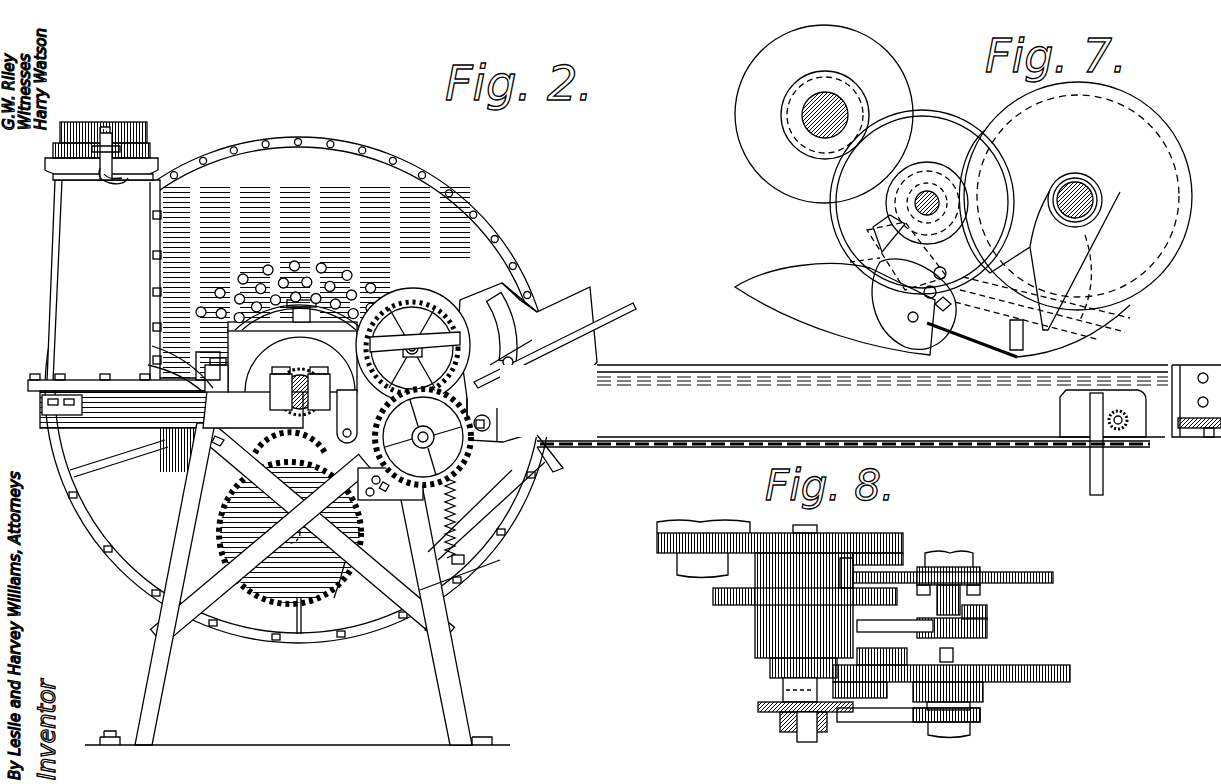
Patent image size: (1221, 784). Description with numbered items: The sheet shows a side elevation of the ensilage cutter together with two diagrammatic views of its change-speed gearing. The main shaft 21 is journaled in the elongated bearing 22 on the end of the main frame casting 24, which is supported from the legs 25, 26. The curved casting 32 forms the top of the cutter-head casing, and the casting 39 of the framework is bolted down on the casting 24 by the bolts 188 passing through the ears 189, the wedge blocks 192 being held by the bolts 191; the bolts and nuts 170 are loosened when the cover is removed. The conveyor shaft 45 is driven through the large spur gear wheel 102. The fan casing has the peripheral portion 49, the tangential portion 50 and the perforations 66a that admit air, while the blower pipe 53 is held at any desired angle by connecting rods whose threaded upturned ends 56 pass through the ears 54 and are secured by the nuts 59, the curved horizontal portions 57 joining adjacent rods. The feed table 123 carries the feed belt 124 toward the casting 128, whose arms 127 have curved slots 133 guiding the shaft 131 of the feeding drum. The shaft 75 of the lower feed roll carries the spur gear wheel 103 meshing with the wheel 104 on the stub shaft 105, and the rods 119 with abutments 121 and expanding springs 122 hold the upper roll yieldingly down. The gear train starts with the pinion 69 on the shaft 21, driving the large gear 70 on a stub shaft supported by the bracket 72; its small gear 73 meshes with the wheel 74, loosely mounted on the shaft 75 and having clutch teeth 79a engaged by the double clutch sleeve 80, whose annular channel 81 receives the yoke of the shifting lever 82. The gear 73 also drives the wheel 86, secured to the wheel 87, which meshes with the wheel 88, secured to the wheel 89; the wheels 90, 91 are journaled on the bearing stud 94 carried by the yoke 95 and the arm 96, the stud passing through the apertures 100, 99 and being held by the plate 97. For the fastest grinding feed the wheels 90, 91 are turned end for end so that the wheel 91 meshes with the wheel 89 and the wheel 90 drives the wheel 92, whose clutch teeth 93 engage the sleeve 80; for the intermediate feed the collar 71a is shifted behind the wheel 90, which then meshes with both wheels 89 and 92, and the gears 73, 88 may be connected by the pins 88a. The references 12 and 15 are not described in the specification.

In FIG. 2, the section line 12 is at (396, 239).
In FIG. 2, the gear 15 is at (418, 428).
In FIG. 2, the shaft 21 is at (285, 398).
In FIG. 2, the elongated bearing 22 is at (318, 376).
In FIG. 2, the main frame casting 24 is at (150, 401).
In FIG. 2, the leg 25 is at (160, 686).
In FIG. 2, the leg 26 is at (440, 666).
In FIG. 2, the curved casting 32 is at (328, 324).
In FIG. 2, the casting 39 is at (202, 368).
In FIG. 2, the conveyor shaft 45 is at (290, 533).
In FIG. 2, the peripheral portion 49 is at (308, 645).
In FIG. 2, the tangential portion 50 is at (70, 268).
In FIG. 2, the blower pipe 53 is at (145, 130).
In FIG. 2, the radial projections or ears 54 is at (103, 130).
In FIG. 2, the threaded upturned end 56 is at (126, 180).
In FIG. 2, the curved horizontal portion 57 is at (162, 172).
In FIG. 2, the nuts 59 is at (113, 146).
In FIG. 2, the perforations 66a is at (322, 264).
In FIG. 7, the spur gear pinion 69 is at (866, 112).
In FIG. 8, the spur gear pinion 69 is at (658, 546).
In FIG. 2, the large gear 70 is at (290, 444).
In FIG. 7, the large gear 70 is at (952, 124).
In FIG. 8, the large gear 70 is at (830, 548).
In FIG. 8, the collar 71a is at (877, 628).
In FIG. 8, the bracket 72 is at (820, 740).
In FIG. 8, the small gear 73 is at (848, 540).
In FIG. 7, the spur gear wheel 74 is at (1100, 106).
In FIG. 8, the spur gear wheel 74 is at (1026, 566).
In FIG. 7, the shaft 75 is at (1088, 192).
In FIG. 8, the shaft 75 is at (962, 598).
In FIG. 8, the clutch teeth 79a is at (950, 578).
In FIG. 8, the double clutch sleeve 80 is at (986, 638).
In FIG. 8, the annular channel 81 is at (980, 628).
In FIG. 2, the shifting lever 82 is at (620, 312).
In FIG. 7, the larger spur gear wheel 86 is at (736, 120).
In FIG. 7, the smaller spur gear wheel 87 is at (806, 158).
In FIG. 7, the larger spur gear wheel 88 is at (962, 134).
In FIG. 8, the larger spur gear wheel 88 is at (716, 600).
In FIG. 8, the pins 88a is at (800, 575).
In FIG. 7, the smaller spur gear wheel 89 is at (900, 170).
In FIG. 8, the smaller spur gear wheel 89 is at (755, 640).
In FIG. 7, the larger spur gear wheel 90 is at (876, 290).
In FIG. 8, the larger spur gear wheel 90 is at (890, 652).
In FIG. 7, the smaller spur gear wheel 91 is at (848, 263).
In FIG. 8, the smaller spur gear wheel 91 is at (884, 688).
In FIG. 7, the larger spur gear wheel 92 is at (1114, 86).
In FIG. 8, the larger spur gear wheel 92 is at (1044, 665).
In FIG. 8, the clutch teeth 93 is at (954, 657).
In FIG. 7, the bearing stud 94 is at (900, 260).
In FIG. 7, the yoke 95 is at (1070, 256).
In FIG. 7, the arm 96 is at (876, 230).
In FIG. 8, the arm 96 is at (770, 708).
In FIG. 7, the holding plate 97 is at (1028, 336).
In FIG. 7, the aperture 99 is at (906, 316).
In FIG. 7, the aperture 100 is at (946, 274).
In FIG. 2, the large spur gear wheel 102 is at (342, 589).
In FIG. 7, the large spur gear wheel 102 is at (790, 276).
In FIG. 2, the spur gear wheel 103 is at (466, 516).
In FIG. 2, the spur gear wheel 104 is at (428, 318).
In FIG. 2, the stub shaft 105 is at (408, 338).
In FIG. 2, the rods 119 is at (458, 513).
In FIG. 2, the abutments 121 is at (470, 549).
In FIG. 2, the helically-coiled expanding springs 122 is at (454, 533).
In FIG. 2, the feed table 123 is at (742, 362).
In FIG. 2, the feed belt 124 is at (620, 450).
In FIG. 2, the arms 127 is at (540, 314).
In FIG. 2, the casting 128 is at (572, 314).
In FIG. 2, the shaft 131 is at (528, 352).
In FIG. 2, the curved slots 133 is at (535, 308).
In FIG. 2, the bolts and nuts 170 is at (292, 325).
In FIG. 2, the bolts 188 is at (292, 346).
In FIG. 2, the ears 189 is at (268, 388).
In FIG. 2, the bolts 191 is at (154, 347).
In FIG. 2, the wedge blocks 192 is at (150, 365).